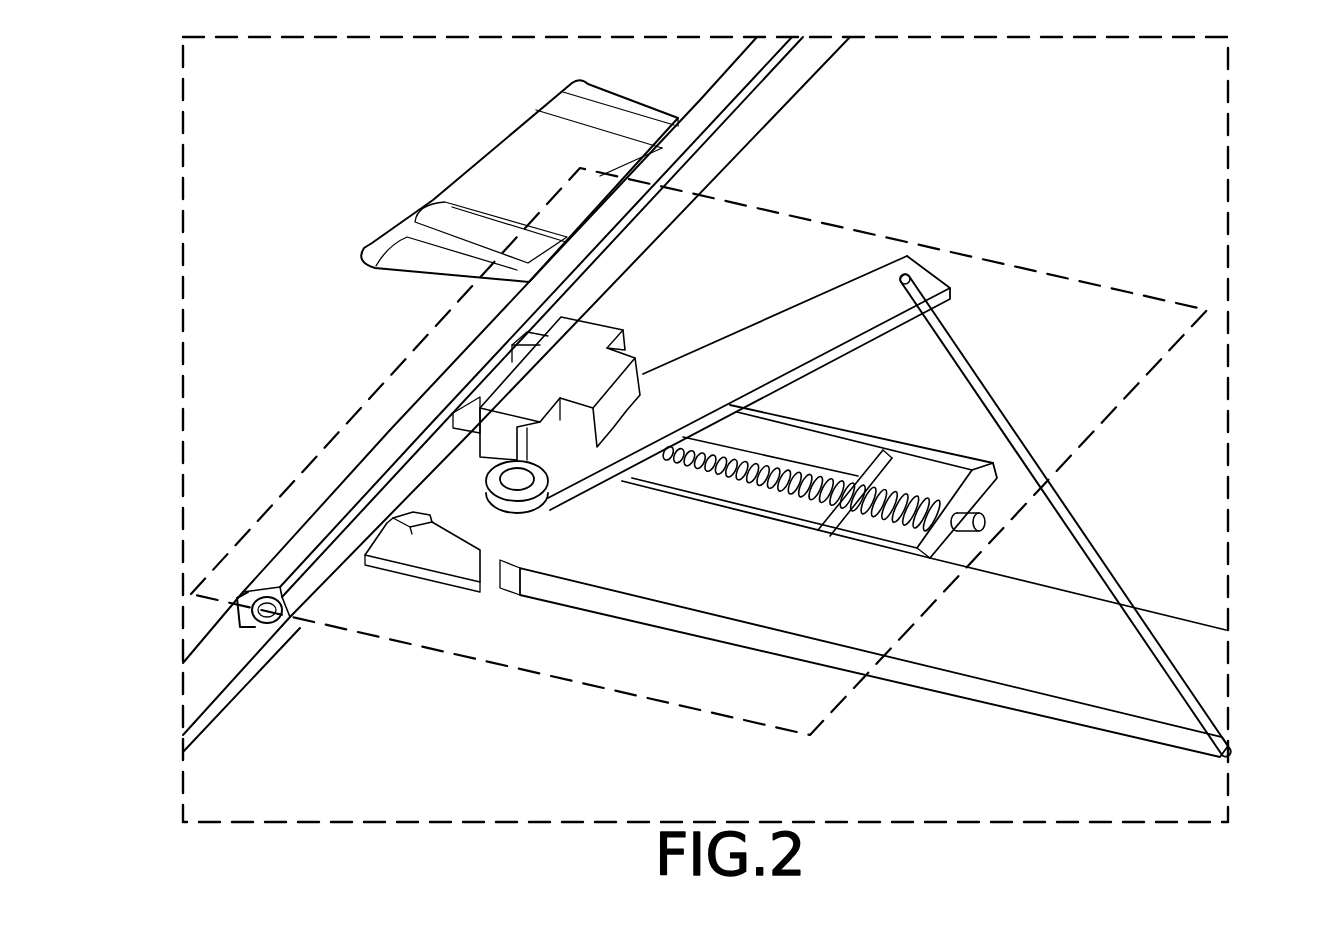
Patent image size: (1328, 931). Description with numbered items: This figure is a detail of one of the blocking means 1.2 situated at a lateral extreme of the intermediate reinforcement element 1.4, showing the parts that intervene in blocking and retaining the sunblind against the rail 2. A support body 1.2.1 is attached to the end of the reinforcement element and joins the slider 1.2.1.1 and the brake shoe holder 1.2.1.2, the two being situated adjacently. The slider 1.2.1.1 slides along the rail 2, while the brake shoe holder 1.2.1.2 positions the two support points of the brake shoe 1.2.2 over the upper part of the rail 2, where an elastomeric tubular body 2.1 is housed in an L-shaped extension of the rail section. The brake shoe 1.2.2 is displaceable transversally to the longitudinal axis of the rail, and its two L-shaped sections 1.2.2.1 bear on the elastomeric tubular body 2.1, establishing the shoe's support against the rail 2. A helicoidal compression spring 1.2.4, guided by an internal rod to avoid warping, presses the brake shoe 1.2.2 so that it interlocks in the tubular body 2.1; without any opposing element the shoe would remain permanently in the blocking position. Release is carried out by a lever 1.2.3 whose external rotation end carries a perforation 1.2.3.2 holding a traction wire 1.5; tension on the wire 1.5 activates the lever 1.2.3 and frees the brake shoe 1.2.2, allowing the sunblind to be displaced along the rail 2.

The rail 2 is at (307, 545).
The elastomeric tubular body 2.1 is at (268, 624).
The blocking means 1.2 is at (580, 684).
The support body 1.2.1 is at (942, 457).
The slider 1.2.1.1 is at (467, 540).
The brake shoe holder 1.2.1.2 is at (588, 372).
The brake shoe 1.2.2 is at (750, 497).
The L-shaped sections 1.2.2.1 is at (457, 402).
The lever 1.2.3 is at (843, 310).
The perforation 1.2.3.2 is at (911, 274).
The spring 1.2.4 is at (890, 512).
The intermediate reinforcement element 1.4 is at (1128, 675).
The wire 1.5 is at (1067, 507).